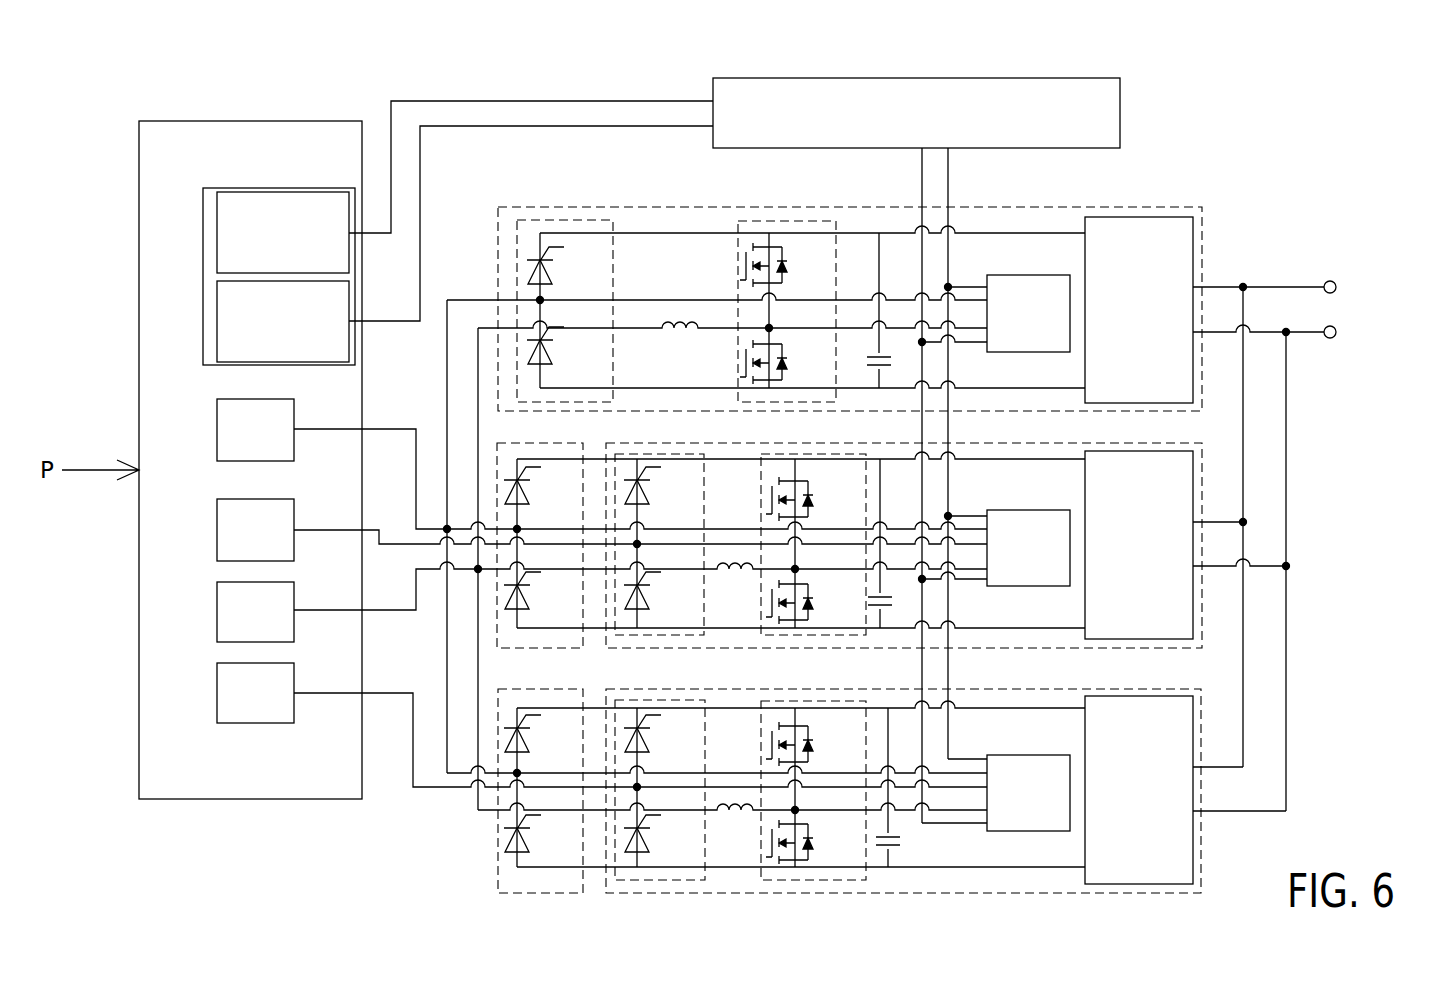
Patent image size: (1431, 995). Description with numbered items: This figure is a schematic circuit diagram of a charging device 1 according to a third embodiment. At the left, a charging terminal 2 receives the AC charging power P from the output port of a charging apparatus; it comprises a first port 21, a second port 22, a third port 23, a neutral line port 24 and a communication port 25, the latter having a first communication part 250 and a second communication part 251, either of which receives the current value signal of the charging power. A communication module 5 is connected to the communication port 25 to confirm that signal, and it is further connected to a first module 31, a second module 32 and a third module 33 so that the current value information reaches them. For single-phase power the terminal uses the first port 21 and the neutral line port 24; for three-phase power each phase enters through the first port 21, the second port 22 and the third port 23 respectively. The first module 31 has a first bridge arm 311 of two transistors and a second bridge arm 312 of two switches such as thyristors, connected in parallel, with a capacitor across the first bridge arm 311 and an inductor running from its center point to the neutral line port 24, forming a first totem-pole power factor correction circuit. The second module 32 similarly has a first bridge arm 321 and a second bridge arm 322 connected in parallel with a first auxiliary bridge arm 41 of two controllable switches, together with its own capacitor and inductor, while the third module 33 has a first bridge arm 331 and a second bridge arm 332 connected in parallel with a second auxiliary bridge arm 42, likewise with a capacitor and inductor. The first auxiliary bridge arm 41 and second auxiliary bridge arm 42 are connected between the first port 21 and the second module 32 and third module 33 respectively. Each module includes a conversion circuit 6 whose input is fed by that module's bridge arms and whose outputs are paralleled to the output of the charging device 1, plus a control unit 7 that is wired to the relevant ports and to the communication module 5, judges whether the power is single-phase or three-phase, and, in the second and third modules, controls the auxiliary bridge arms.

The charging device 1 is at (1357, 100).
The charging terminal 2 is at (139, 212).
The communication module 5 is at (1120, 112).
The conversion circuit 6 is at (1085, 380).
The control unit 7 is at (1033, 275).
The first port 21 is at (217, 430).
The second port 22 is at (217, 532).
The third port 23 is at (217, 700).
The neutral line port 24 is at (217, 613).
The communication port 25 is at (257, 188).
The first communication part 250 is at (217, 242).
The second communication part 251 is at (217, 315).
The first module 31 is at (1202, 233).
The second module 32 is at (1202, 627).
The third module 33 is at (1201, 866).
The first auxiliary bridge arm 41 is at (552, 650).
The second auxiliary bridge arm 42 is at (530, 893).
The first bridge arm 311 is at (790, 221).
The second bridge arm 312 is at (565, 220).
The first bridge arm 321 is at (808, 636).
The second bridge arm 322 is at (662, 636).
The first bridge arm 331 is at (808, 880).
The second bridge arm 332 is at (660, 880).